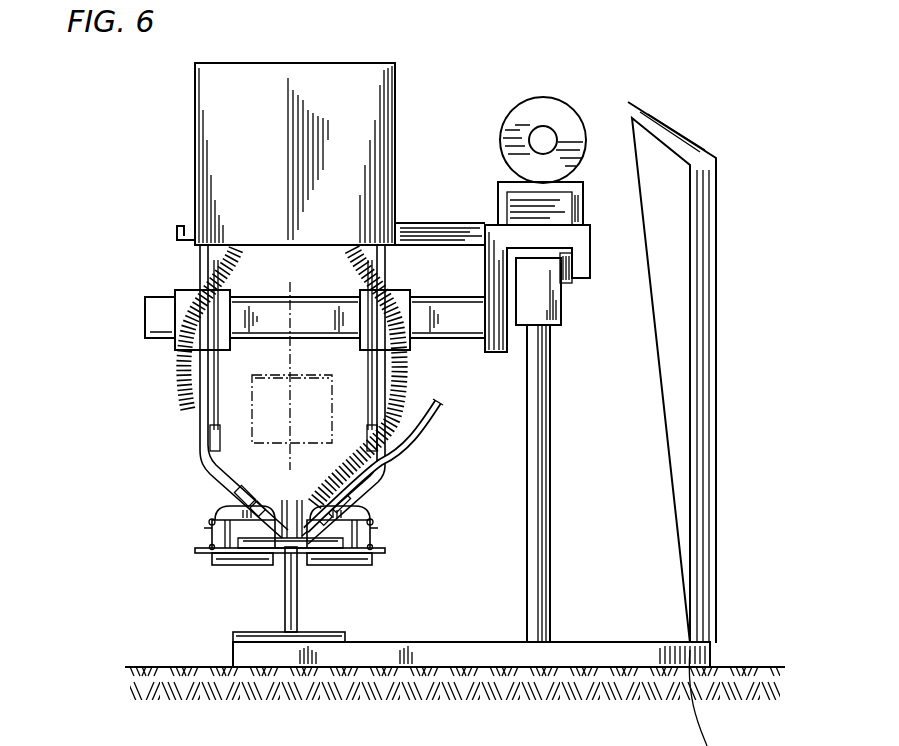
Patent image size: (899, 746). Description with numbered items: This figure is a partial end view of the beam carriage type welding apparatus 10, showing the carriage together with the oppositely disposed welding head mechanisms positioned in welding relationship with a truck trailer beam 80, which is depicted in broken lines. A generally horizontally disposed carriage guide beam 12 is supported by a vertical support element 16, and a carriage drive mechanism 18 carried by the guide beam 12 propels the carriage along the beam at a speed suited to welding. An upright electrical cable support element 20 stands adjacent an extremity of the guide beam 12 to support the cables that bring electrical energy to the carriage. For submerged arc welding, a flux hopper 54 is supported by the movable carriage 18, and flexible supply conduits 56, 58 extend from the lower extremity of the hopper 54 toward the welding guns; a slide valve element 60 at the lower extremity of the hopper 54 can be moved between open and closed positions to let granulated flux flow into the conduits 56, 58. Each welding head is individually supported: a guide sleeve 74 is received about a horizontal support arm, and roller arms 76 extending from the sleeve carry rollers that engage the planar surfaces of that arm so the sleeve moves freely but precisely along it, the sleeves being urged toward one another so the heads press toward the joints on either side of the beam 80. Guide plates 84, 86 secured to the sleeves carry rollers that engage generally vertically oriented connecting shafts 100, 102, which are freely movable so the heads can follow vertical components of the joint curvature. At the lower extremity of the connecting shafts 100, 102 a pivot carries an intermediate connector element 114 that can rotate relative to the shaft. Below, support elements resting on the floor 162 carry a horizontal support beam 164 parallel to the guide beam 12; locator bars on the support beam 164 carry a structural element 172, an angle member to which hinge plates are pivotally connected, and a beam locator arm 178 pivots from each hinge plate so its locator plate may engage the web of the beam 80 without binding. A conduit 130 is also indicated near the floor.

The beam carriage type welding apparatus 10 is at (438, 104).
The carriage guide beam 12 is at (556, 316).
The vertical support element 16 is at (540, 526).
The carriage drive mechanism 18 is at (594, 211).
The upright electrical cable support element 20 is at (714, 403).
The flux hopper 54 is at (311, 78).
The flexible supply conduit 56 is at (176, 365).
The flexible supply conduit 58 is at (408, 371).
The slide valve element 60 is at (177, 229).
The guide sleeve 74 is at (190, 300).
The roller arm 76 is at (404, 303).
The truck trailer beam 80 is at (290, 365).
The guide plate 84 is at (212, 366).
The guide plate 86 is at (375, 368).
The connecting shaft 100 is at (198, 421).
The connecting shaft 102 is at (386, 418).
The intermediate connector element 114 is at (375, 489).
The conduit 130 is at (76, 745).
The floor 162 is at (738, 667).
The horizontal support beam 164 is at (300, 601).
The structural element 172 is at (198, 556).
The beam locator arm 178 is at (217, 508).